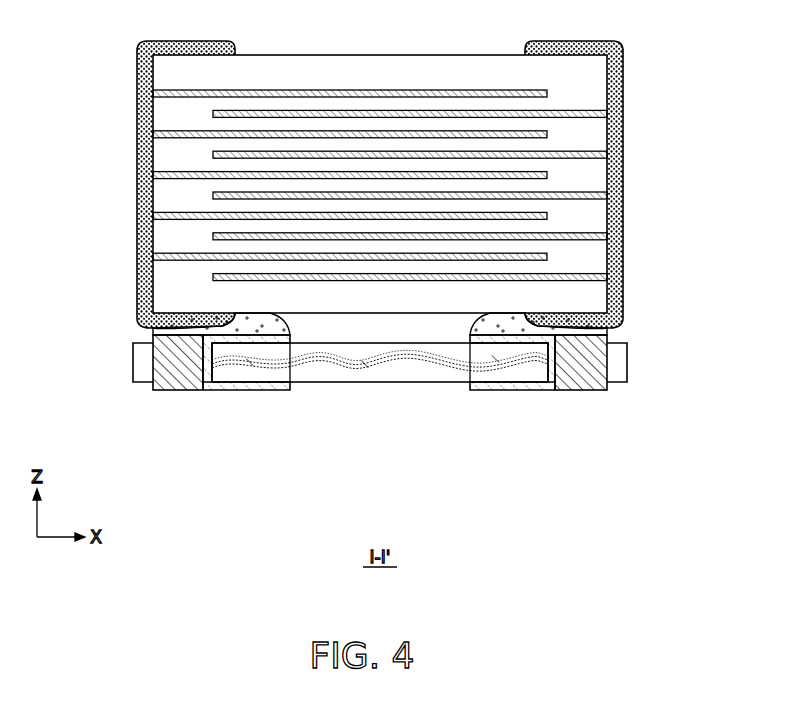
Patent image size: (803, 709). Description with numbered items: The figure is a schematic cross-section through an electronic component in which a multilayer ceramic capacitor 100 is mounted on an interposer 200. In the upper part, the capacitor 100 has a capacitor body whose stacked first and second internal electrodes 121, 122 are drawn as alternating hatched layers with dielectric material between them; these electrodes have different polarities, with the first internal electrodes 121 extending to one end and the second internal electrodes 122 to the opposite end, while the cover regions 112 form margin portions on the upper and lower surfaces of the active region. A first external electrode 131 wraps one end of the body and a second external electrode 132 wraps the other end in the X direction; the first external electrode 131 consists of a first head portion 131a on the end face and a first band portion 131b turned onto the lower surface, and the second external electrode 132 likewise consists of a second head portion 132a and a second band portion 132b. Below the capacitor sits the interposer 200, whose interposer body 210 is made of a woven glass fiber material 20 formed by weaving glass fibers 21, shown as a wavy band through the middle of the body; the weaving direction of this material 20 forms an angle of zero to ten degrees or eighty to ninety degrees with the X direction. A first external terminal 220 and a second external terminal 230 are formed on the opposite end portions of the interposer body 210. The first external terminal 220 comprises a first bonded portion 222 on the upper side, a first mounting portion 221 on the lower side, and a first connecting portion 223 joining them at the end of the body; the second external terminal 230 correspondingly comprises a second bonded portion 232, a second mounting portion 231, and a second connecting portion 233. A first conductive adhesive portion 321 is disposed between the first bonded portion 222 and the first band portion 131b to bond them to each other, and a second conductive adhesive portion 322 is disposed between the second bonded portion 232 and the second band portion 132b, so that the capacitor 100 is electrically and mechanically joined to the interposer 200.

The multilayer ceramic capacitor 100 is at (381, 229).
The cover regions 112 is at (383, 72).
The first internal electrodes 121 is at (284, 89).
The second internal electrodes 122 is at (482, 110).
The first external electrode 131 is at (121, 184).
The first head portion 131a is at (147, 240).
The first band portion 131b is at (178, 322).
The second external electrode 132 is at (640, 184).
The second head portion 132a is at (613, 240).
The second band portion 132b is at (582, 322).
The first conductive adhesive portion 321 is at (160, 338).
The second conductive adhesive portion 322 is at (600, 338).
The interposer 200 is at (424, 408).
The interposer body 210 is at (393, 383).
The woven glass fiber material 20 is at (380, 415).
The glass fibers 21 is at (330, 366).
The first external terminal 220 is at (223, 408).
The first mounting portion 221 is at (250, 391).
The first bonded portion 222 is at (229, 343).
The first connecting portion 223 is at (185, 367).
The second external terminal 230 is at (537, 408).
The second mounting portion 231 is at (509, 391).
The second bonded portion 232 is at (533, 343).
The second connecting portion 233 is at (568, 367).